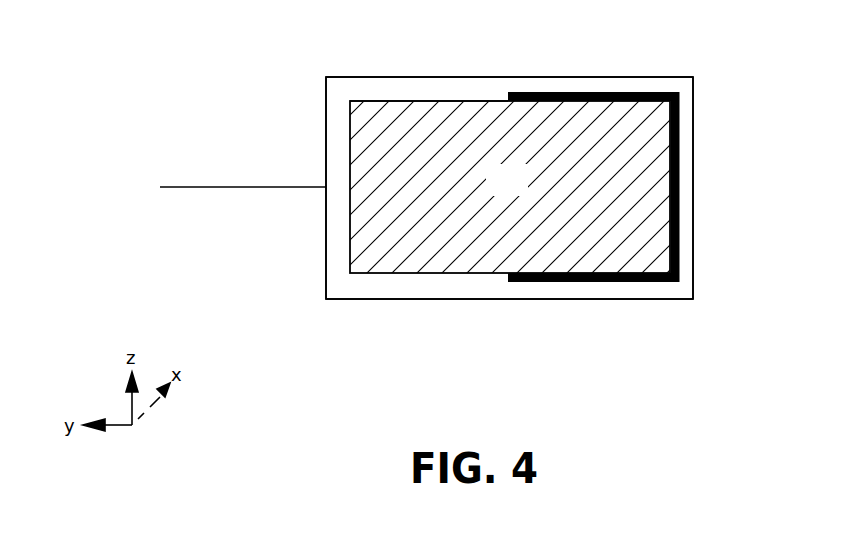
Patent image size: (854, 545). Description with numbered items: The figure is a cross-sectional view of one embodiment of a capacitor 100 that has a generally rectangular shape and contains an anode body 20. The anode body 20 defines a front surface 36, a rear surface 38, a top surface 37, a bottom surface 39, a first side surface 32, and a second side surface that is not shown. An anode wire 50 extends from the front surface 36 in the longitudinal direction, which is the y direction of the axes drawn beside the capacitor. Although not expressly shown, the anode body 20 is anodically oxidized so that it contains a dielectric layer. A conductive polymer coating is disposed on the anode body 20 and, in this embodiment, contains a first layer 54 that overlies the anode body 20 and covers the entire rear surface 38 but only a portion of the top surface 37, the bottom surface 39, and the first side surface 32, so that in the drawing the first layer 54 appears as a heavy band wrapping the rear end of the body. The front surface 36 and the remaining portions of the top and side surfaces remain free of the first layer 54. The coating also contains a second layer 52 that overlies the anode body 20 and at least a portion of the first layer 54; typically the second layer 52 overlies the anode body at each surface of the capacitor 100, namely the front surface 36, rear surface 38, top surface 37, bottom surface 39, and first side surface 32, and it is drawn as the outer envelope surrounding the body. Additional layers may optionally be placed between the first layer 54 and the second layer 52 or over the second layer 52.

The capacitor 100 is at (752, 79).
The anode body 20 is at (612, 173).
The first side surface 32 is at (524, 192).
The front surface 36 is at (350, 128).
The top surface 37 is at (418, 99).
The rear surface 38 is at (680, 248).
The bottom surface 39 is at (404, 275).
The anode wire 50 is at (255, 188).
The second layer 52 is at (497, 90).
The first layer 54 is at (650, 92).